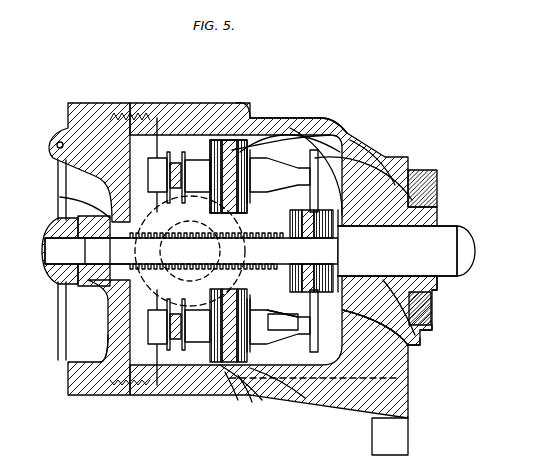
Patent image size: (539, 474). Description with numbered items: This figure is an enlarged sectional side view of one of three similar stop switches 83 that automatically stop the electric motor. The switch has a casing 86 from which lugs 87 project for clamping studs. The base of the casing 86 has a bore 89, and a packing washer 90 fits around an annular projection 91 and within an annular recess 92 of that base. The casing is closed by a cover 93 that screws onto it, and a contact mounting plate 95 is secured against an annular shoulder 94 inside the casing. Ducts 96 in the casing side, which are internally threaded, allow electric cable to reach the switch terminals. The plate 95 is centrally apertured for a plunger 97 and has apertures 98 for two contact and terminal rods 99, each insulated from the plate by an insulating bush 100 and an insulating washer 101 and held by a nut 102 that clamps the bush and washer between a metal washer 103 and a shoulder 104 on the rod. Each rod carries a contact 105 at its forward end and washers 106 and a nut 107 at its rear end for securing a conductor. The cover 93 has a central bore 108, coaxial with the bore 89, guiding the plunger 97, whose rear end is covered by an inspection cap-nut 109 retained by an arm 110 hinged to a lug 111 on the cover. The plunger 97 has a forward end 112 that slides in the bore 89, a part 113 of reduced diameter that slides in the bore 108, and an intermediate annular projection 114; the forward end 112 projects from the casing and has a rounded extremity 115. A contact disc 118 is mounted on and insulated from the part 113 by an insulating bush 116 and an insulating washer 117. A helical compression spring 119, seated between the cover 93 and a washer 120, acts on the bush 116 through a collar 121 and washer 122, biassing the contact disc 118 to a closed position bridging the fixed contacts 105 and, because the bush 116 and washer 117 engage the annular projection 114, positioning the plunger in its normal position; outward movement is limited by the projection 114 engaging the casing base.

The stop switch 83 is at (137, 98).
The casing 86 is at (278, 120).
The lugs 87 is at (408, 433).
The bore 89 is at (414, 341).
The packing washer 90 is at (430, 324).
The annular projection 91 is at (433, 287).
The annular recess 92 is at (431, 303).
The cover 93 is at (106, 343).
The annular shoulder 94 is at (244, 396).
The contact mounting plate 95 is at (224, 395).
The ducts 96 is at (162, 272).
The plunger 97 is at (334, 264).
The apertures 98 is at (306, 128).
The contact and terminal rods 99 is at (282, 190).
The insulating bush 100 is at (222, 140).
The insulating washer 101 is at (248, 130).
The nut 102 is at (190, 160).
The metal washer 103 is at (215, 142).
The shoulder 104 is at (280, 178).
The contact 105 is at (322, 150).
The washers 106 is at (185, 180).
The nut 107 is at (143, 158).
The central bore 108 is at (92, 282).
The inspection cap-nut 109 is at (46, 250).
The arm 110 is at (62, 176).
The lug 111 is at (55, 142).
The forward end 112 is at (462, 234).
The part of reduced diameter 113 is at (335, 240).
The intermediate annular projection 114 is at (336, 249).
The rounded extremity 115 is at (468, 262).
The insulating bush 116 is at (290, 215).
The insulating washer 117 is at (414, 170).
The contact disc 118 is at (372, 165).
The helical compression spring 119 is at (60, 197).
The washer 120 is at (262, 298).
The collar 121 is at (280, 308).
The washer 122 is at (283, 322).